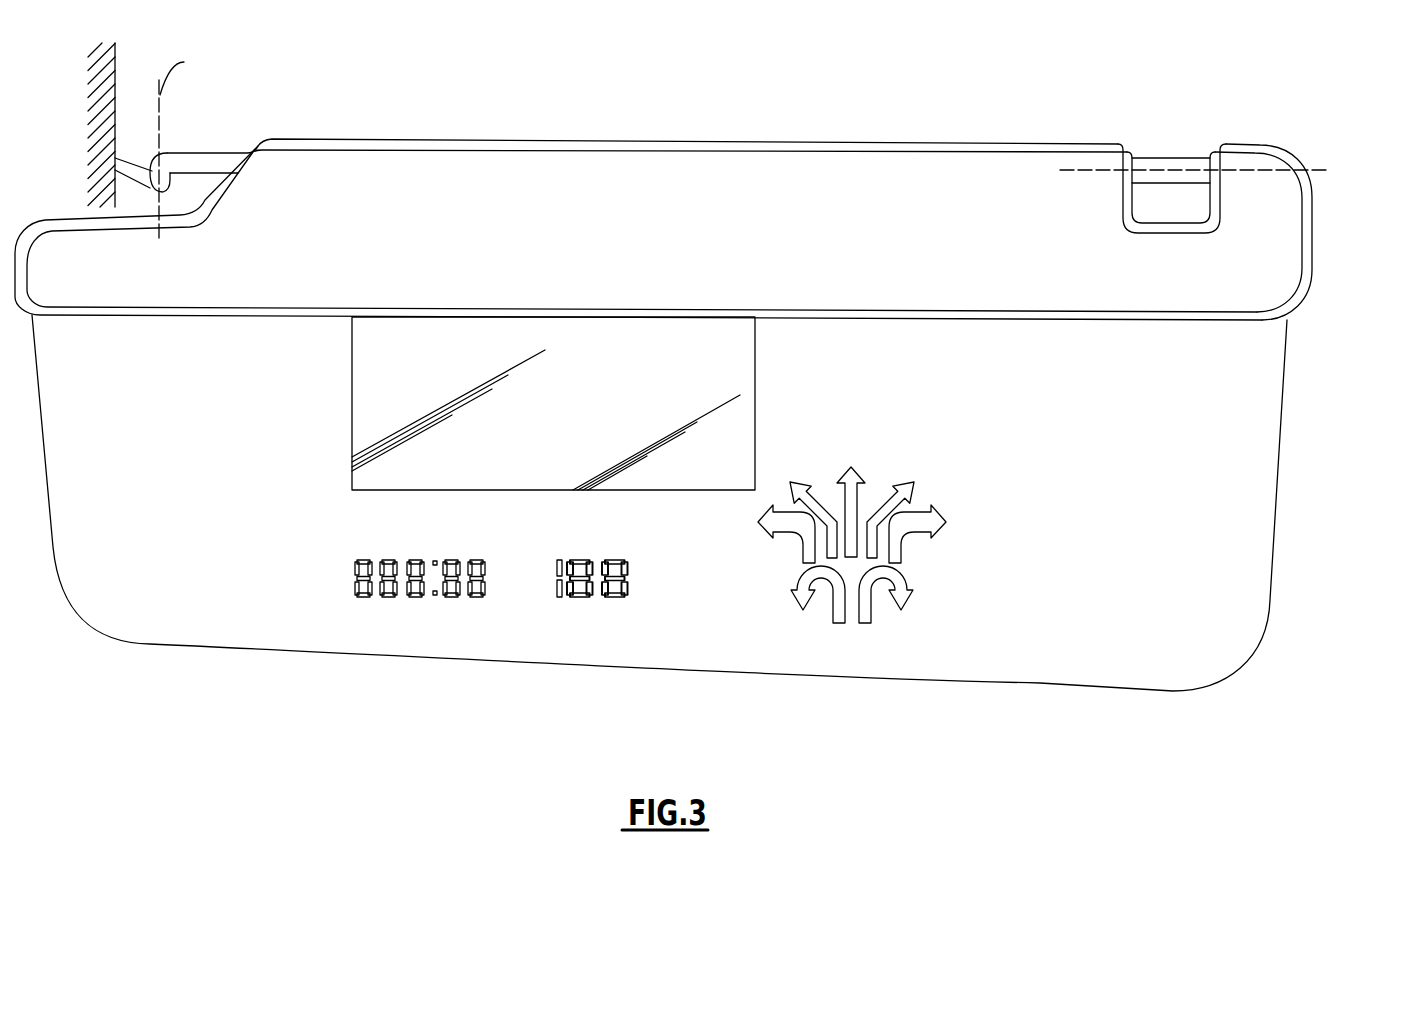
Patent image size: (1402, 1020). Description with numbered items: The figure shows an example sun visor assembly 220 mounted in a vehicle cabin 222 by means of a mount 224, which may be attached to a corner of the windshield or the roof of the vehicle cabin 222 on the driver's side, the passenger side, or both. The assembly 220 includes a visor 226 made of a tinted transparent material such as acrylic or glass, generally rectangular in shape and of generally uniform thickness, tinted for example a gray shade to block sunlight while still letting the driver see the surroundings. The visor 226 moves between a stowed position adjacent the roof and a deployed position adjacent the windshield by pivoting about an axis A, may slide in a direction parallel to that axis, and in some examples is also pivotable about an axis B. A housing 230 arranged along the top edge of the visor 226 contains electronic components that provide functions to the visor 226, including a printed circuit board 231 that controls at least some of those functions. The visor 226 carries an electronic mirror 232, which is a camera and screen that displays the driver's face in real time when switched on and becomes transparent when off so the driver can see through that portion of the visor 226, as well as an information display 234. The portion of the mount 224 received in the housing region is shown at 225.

The sun visor assembly 220 is at (521, 112).
The vehicle cabin 222 is at (98, 112).
The mount 224 is at (206, 140).
The rod portion in notch 225 is at (1173, 160).
The visor 226 is at (1200, 593).
The housing 230 is at (1033, 165).
The printed circuit board 231 is at (1312, 220).
The electronic mirror 232 is at (362, 422).
The information display 234 is at (503, 614).